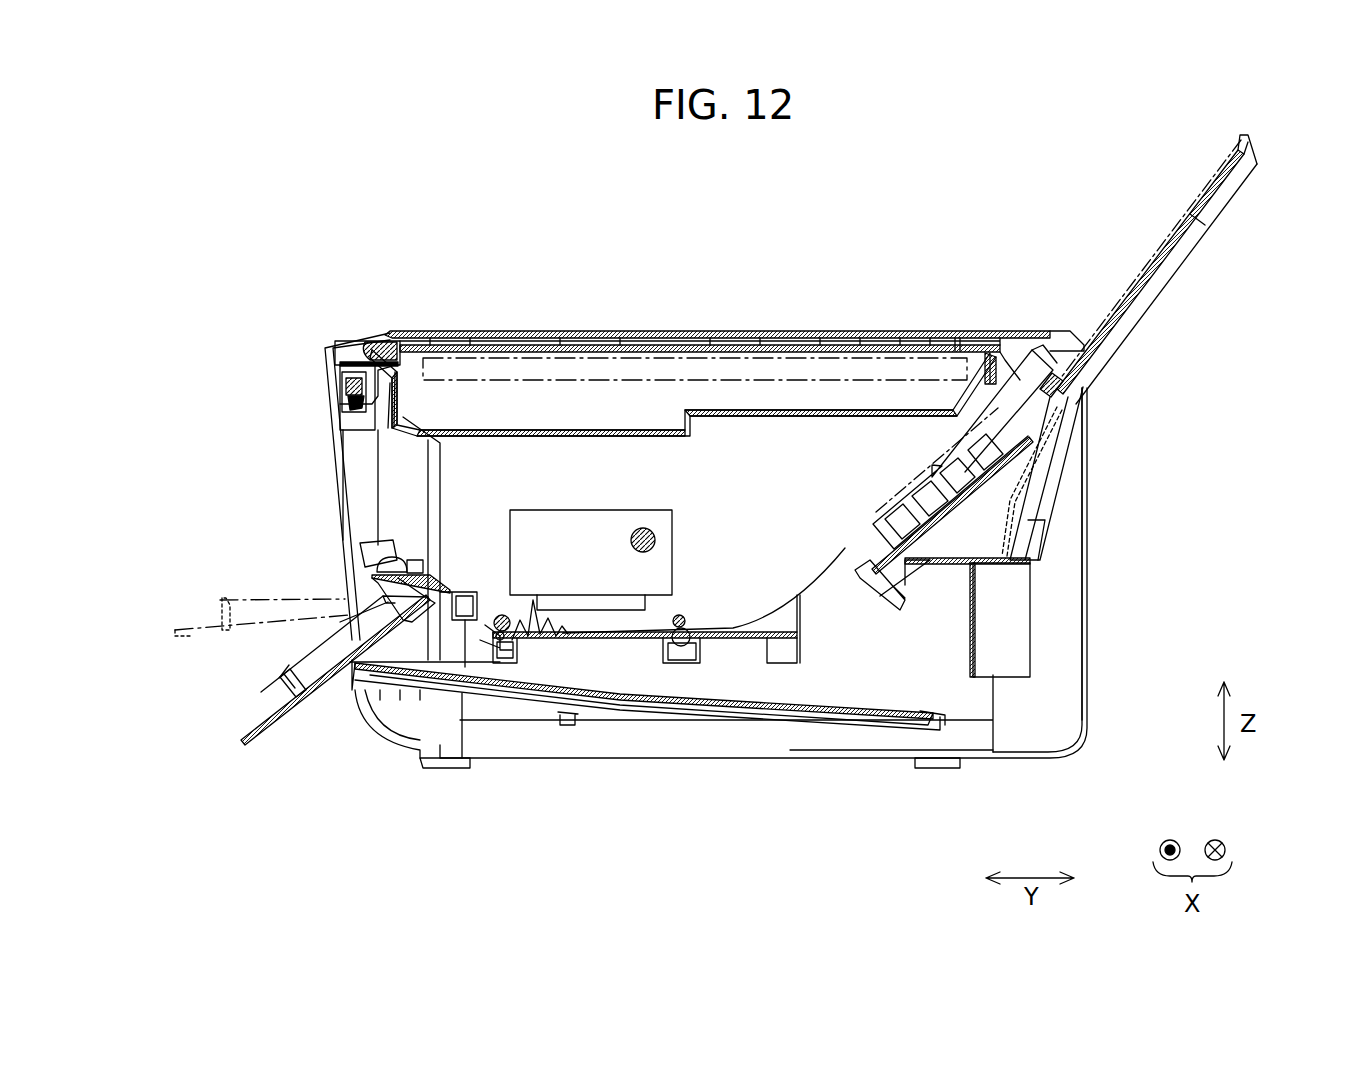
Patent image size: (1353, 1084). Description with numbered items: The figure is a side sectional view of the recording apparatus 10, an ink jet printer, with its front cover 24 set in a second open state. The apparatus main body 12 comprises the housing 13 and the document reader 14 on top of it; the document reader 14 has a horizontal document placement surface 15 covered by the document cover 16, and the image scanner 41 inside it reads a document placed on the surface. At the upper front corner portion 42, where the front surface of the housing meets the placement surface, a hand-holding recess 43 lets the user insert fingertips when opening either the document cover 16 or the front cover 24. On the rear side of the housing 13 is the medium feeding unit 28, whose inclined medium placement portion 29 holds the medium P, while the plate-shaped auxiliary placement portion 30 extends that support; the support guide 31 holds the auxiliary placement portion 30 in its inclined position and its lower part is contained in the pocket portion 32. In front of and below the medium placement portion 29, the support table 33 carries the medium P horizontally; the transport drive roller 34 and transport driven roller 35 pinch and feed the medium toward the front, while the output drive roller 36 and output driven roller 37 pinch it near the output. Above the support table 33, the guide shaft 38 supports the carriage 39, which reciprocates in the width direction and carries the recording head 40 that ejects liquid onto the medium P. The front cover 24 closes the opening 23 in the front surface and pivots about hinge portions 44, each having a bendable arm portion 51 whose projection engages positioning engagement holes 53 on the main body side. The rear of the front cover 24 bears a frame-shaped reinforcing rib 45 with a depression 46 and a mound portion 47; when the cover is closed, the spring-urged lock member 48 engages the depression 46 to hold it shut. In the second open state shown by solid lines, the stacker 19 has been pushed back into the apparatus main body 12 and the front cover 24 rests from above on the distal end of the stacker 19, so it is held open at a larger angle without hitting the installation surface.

The recording apparatus 10 is at (980, 242).
The apparatus main body 12 is at (1161, 370).
The housing 13 is at (1090, 436).
The document reader 14 is at (1090, 390).
The document placement surface 15 is at (598, 330).
The document cover 16 is at (486, 330).
The stacker 19 is at (348, 690).
The opening 23 is at (356, 459).
The front cover 24 is at (240, 712).
The medium feeding unit 28 is at (1062, 549).
The medium placement portion 29 is at (898, 530).
The auxiliary placement portion 30 is at (1175, 232).
The support guide 31 is at (1055, 477).
The pocket portion 32 is at (1020, 630).
The support table 33 is at (616, 632).
The transport drive roller 34 is at (700, 652).
The transport driven roller 35 is at (680, 618).
The output drive roller 36 is at (516, 655).
The output driven roller 37 is at (500, 617).
The guide shaft 38 is at (658, 540).
The carriage 39 is at (520, 527).
The recording head 40 is at (530, 622).
The image scanner 41 is at (470, 380).
The corner portion 42 is at (316, 325).
The hand-holding recess 43 is at (350, 344).
The hinge portions 44 is at (378, 592).
The reinforcing rib 45 is at (291, 690).
The depression 46 is at (276, 700).
The mound portion 47 is at (280, 684).
The lock member 48 is at (346, 410).
The arm portion 51 is at (373, 542).
The engagement holes 53 is at (402, 538).
The medium P is at (560, 632).